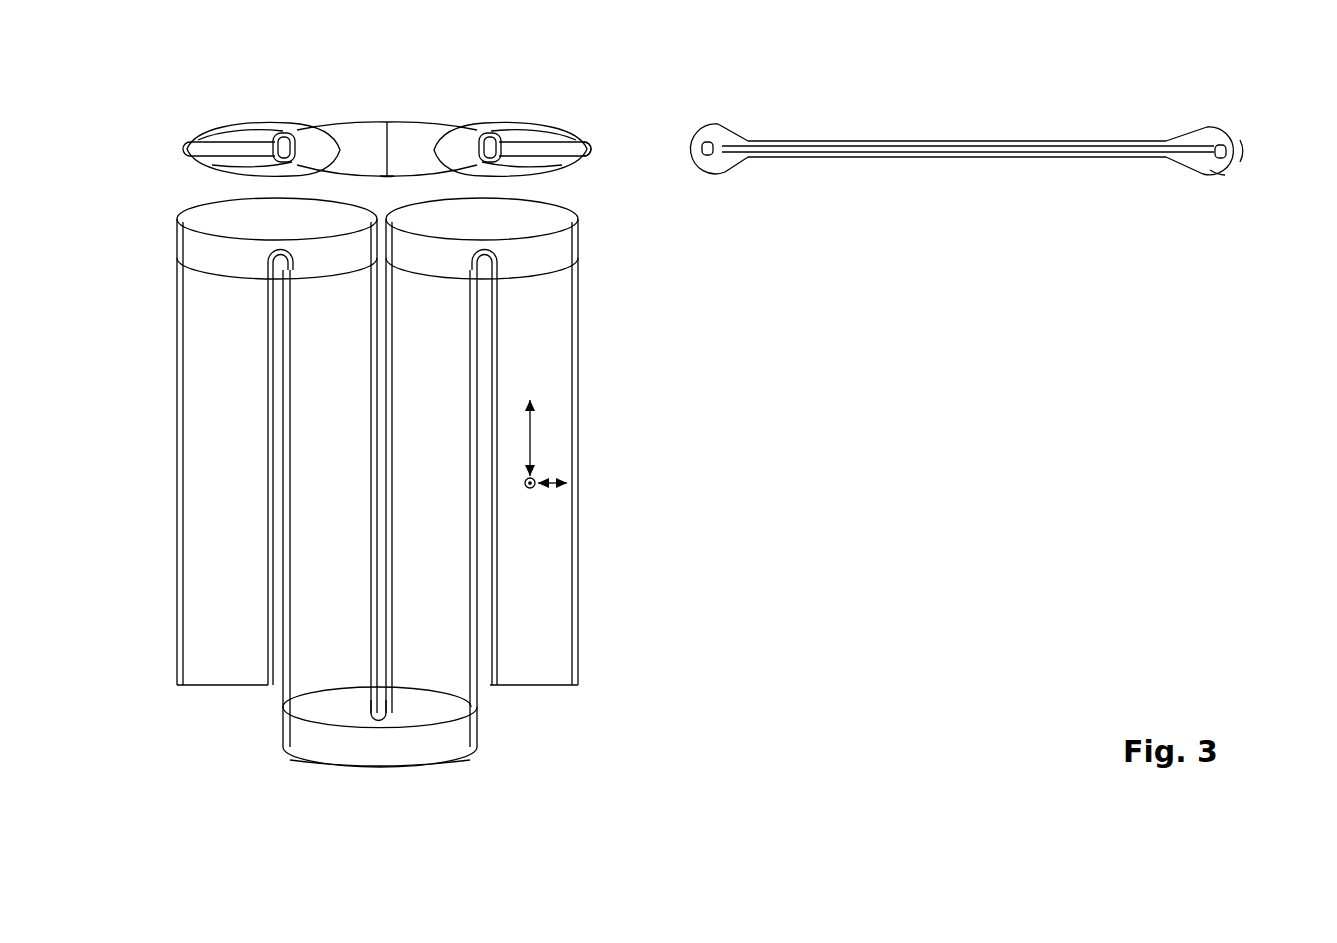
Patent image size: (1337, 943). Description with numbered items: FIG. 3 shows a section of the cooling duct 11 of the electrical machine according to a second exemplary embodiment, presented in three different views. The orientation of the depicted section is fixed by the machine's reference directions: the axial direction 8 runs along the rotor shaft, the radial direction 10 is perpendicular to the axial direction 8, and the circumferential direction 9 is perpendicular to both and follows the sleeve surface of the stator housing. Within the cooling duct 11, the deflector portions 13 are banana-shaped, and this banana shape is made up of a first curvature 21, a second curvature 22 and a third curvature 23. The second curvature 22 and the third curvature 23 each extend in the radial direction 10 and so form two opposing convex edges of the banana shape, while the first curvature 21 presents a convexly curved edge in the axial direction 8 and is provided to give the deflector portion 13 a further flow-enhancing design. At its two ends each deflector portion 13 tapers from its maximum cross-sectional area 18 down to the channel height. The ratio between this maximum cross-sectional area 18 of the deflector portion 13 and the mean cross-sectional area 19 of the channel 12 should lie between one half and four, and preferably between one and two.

The axial direction 8 is at (533, 423).
The circumferential direction 9 is at (556, 488).
The radial direction 10 is at (540, 475).
The cooling duct 11 is at (596, 171).
The channel 12 is at (240, 137).
The deflector portion 13 is at (274, 127).
The maximum cross-sectional area 18 is at (392, 137).
The mean cross-sectional area 19 is at (583, 150).
The first curvature 21 is at (317, 763).
The second curvature 22 is at (348, 128).
The third curvature 23 is at (395, 176).